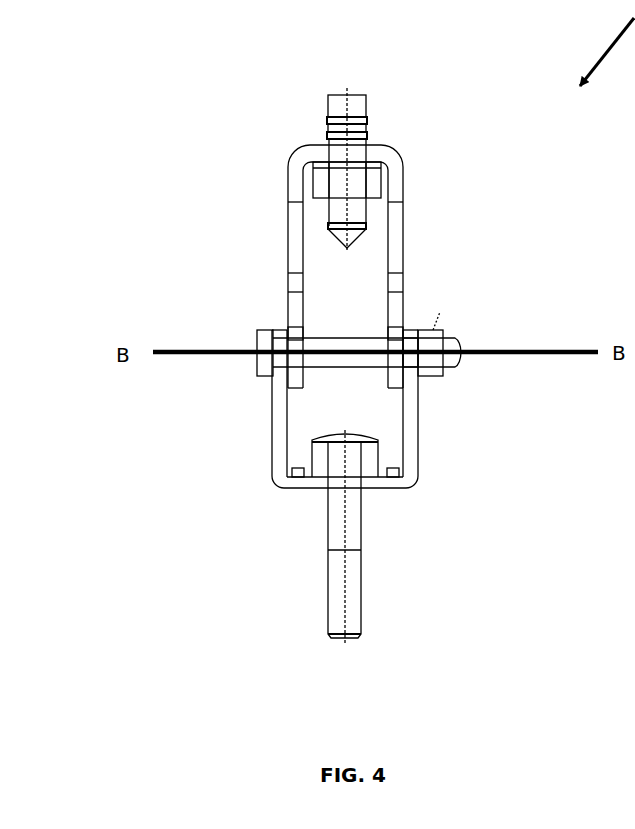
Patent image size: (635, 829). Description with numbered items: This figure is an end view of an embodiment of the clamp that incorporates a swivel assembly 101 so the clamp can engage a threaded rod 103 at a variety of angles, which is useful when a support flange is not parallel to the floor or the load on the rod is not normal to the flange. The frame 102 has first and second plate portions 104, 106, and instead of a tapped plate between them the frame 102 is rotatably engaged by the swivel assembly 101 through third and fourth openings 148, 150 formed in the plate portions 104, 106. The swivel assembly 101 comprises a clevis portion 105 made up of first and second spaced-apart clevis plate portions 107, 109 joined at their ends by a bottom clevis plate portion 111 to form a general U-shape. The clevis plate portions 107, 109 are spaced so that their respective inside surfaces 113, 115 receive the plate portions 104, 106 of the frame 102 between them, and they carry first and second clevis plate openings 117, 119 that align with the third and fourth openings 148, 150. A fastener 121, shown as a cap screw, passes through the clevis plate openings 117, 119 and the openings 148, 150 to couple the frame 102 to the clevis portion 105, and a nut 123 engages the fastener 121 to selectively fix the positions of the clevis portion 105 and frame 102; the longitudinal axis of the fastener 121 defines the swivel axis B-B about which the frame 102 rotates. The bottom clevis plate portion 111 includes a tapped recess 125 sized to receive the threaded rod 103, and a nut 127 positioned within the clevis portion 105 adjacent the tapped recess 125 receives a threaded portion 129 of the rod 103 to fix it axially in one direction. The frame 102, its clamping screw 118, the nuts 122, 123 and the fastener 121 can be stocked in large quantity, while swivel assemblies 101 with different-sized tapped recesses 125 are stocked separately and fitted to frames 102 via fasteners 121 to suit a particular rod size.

The swivel assembly 101 is at (238, 473).
The frame 102 is at (235, 225).
The threaded rod 103 is at (342, 555).
The first plate portion 104 is at (298, 187).
The clevis portion 105 is at (408, 482).
The second plate portion 106 is at (393, 165).
The first clevis plate portion 107 is at (279, 441).
The second clevis plate portion 109 is at (413, 417).
The bottom clevis plate portion 111 is at (300, 481).
The inside surface 113 is at (287, 412).
The inside surface 115 is at (403, 403).
The first clevis plate opening 117 is at (283, 366).
The clamping screw 118 is at (350, 137).
The second clevis plate opening 119 is at (407, 366).
The fastener 121 is at (263, 348).
The nut 122 is at (313, 165).
The nut 123 is at (432, 340).
The tapped recess 125 is at (360, 480).
The nut 127 is at (377, 457).
The threaded portion 129 is at (327, 463).
The third opening 148 is at (295, 335).
The fourth opening 150 is at (397, 342).